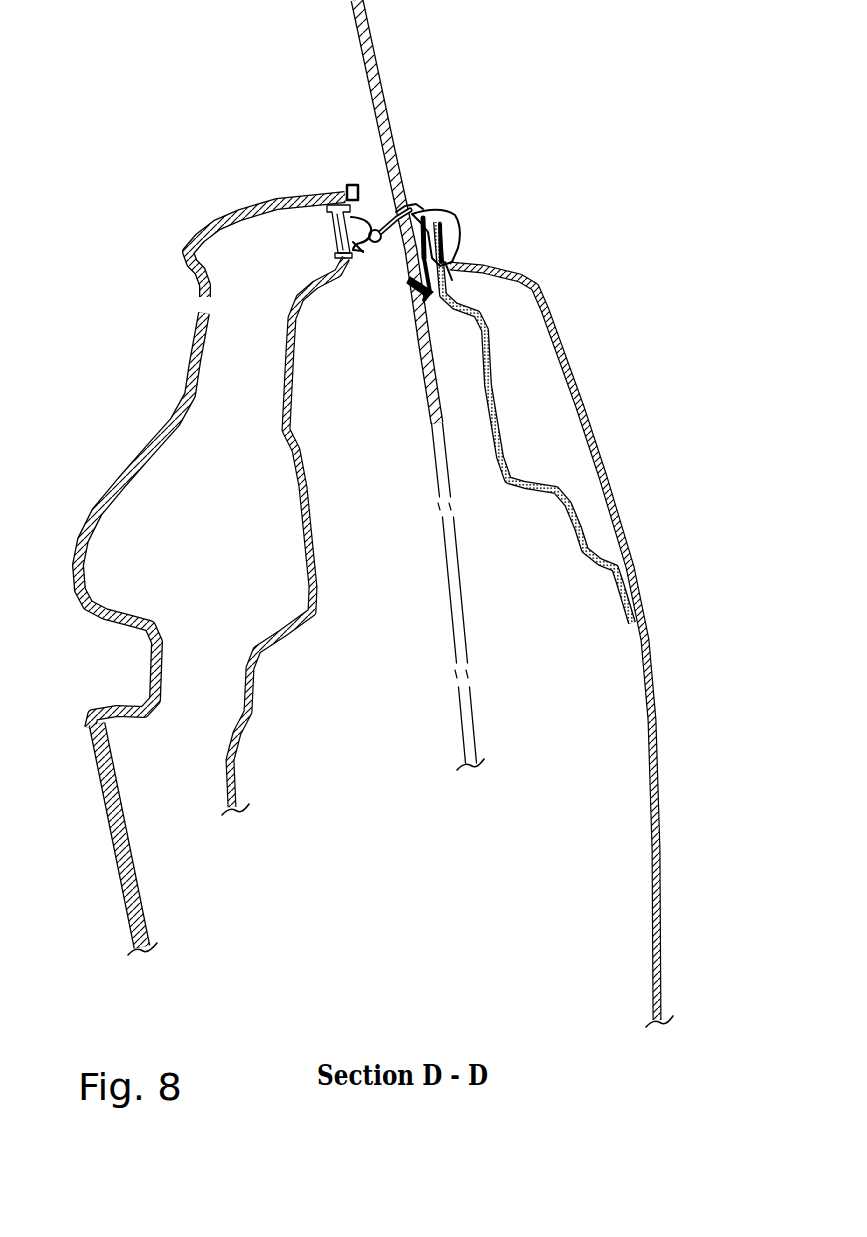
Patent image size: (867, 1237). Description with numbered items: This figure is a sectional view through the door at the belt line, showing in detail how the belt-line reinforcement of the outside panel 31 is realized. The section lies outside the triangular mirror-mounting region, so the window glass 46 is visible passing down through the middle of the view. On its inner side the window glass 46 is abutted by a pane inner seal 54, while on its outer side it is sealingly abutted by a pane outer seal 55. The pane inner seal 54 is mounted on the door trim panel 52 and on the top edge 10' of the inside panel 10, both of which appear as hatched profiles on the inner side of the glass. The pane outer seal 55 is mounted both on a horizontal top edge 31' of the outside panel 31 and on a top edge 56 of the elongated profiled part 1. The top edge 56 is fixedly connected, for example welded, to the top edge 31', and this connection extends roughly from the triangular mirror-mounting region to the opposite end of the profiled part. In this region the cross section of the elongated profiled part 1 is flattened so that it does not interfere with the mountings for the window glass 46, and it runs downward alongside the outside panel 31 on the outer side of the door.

The elongated profiled part 1 is at (578, 557).
The inside panel 10 is at (314, 536).
The top edge of inside panel 10' is at (378, 281).
The outside panel 31 is at (595, 646).
The horizontal top edge of outside panel 31' is at (486, 210).
The window glass 46 is at (393, 163).
The door trim panel 52 is at (177, 392).
The pane inner seal 54 is at (350, 186).
The pane outer seal 55 is at (455, 241).
The top edge of elongated profiled part 56 is at (434, 215).